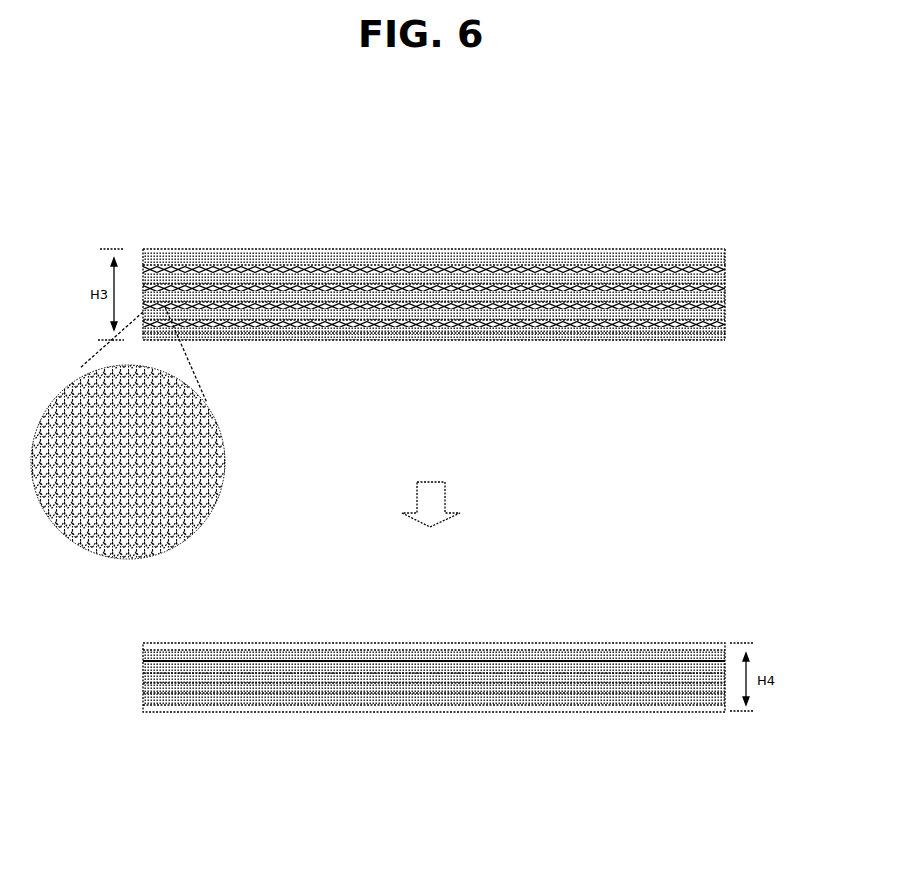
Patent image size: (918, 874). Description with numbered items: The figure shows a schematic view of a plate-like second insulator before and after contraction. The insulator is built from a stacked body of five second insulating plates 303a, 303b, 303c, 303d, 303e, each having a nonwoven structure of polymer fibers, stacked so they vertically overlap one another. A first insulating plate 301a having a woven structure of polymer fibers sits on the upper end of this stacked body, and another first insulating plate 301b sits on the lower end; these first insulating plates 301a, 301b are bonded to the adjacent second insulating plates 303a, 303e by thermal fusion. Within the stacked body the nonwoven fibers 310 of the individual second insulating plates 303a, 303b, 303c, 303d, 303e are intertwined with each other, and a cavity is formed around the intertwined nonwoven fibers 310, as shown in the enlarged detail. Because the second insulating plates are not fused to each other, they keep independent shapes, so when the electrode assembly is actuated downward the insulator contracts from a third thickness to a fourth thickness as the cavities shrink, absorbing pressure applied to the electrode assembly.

The first insulating plate 301a is at (726, 250).
The second insulating plate 303a is at (726, 265).
The second insulating plate 303b is at (726, 280).
The second insulating plate 303c is at (726, 292).
The second insulating plate 303d is at (726, 308).
The second insulating plate 303e is at (726, 320).
The first insulating plate 301b is at (726, 335).
The nonwoven fibers 310 is at (216, 488).